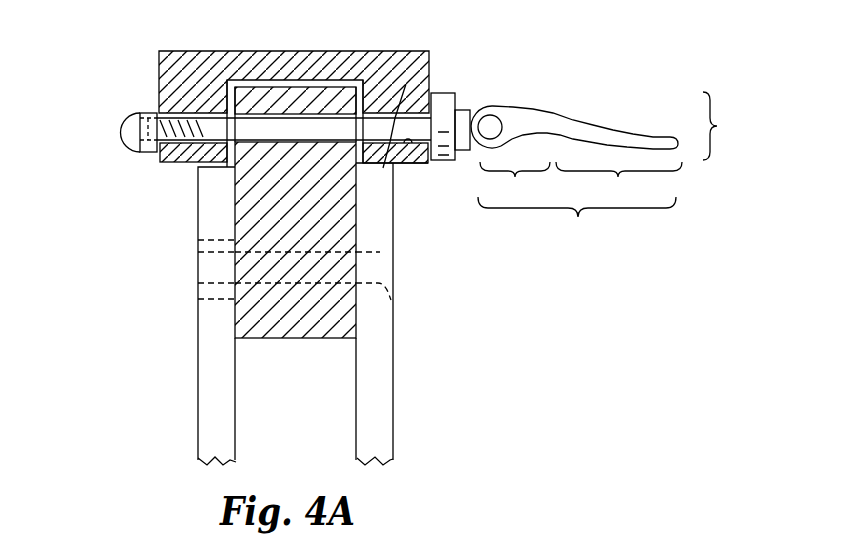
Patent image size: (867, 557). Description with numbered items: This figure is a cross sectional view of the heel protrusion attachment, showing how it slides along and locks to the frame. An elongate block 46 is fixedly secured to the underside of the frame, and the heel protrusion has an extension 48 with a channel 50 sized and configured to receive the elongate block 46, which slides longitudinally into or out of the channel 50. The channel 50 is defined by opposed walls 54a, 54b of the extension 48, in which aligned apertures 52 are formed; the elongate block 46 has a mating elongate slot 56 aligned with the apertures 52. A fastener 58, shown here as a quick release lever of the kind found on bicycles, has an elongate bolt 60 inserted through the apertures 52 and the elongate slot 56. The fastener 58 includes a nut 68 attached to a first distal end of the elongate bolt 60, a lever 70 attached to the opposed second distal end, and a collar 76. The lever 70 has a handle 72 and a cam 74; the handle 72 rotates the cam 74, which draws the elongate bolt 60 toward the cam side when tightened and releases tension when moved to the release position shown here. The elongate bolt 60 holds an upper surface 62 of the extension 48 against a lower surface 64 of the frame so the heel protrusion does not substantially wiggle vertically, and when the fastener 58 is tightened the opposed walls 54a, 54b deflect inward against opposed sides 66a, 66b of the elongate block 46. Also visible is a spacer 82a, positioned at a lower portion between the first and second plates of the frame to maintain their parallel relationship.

The elongate block 46 is at (272, 96).
The extension 48 is at (293, 62).
The channel 50 is at (365, 88).
The apertures 52 is at (157, 140).
The opposed wall 54a is at (407, 163).
The opposed wall 54b is at (182, 157).
The elongate slot 56 is at (320, 128).
The fastener 58 is at (610, 170).
The elongate bolt 60 is at (217, 123).
The upper surface 62 is at (427, 72).
The lower surface 64 is at (378, 166).
The opposed side 66a is at (365, 168).
The opposed side 66b is at (190, 166).
The nut 68 is at (128, 115).
The lever 70 is at (577, 222).
The handle 72 is at (587, 156).
The cam 74 is at (510, 156).
The collar 76 is at (448, 98).
The spacer 82a is at (308, 327).